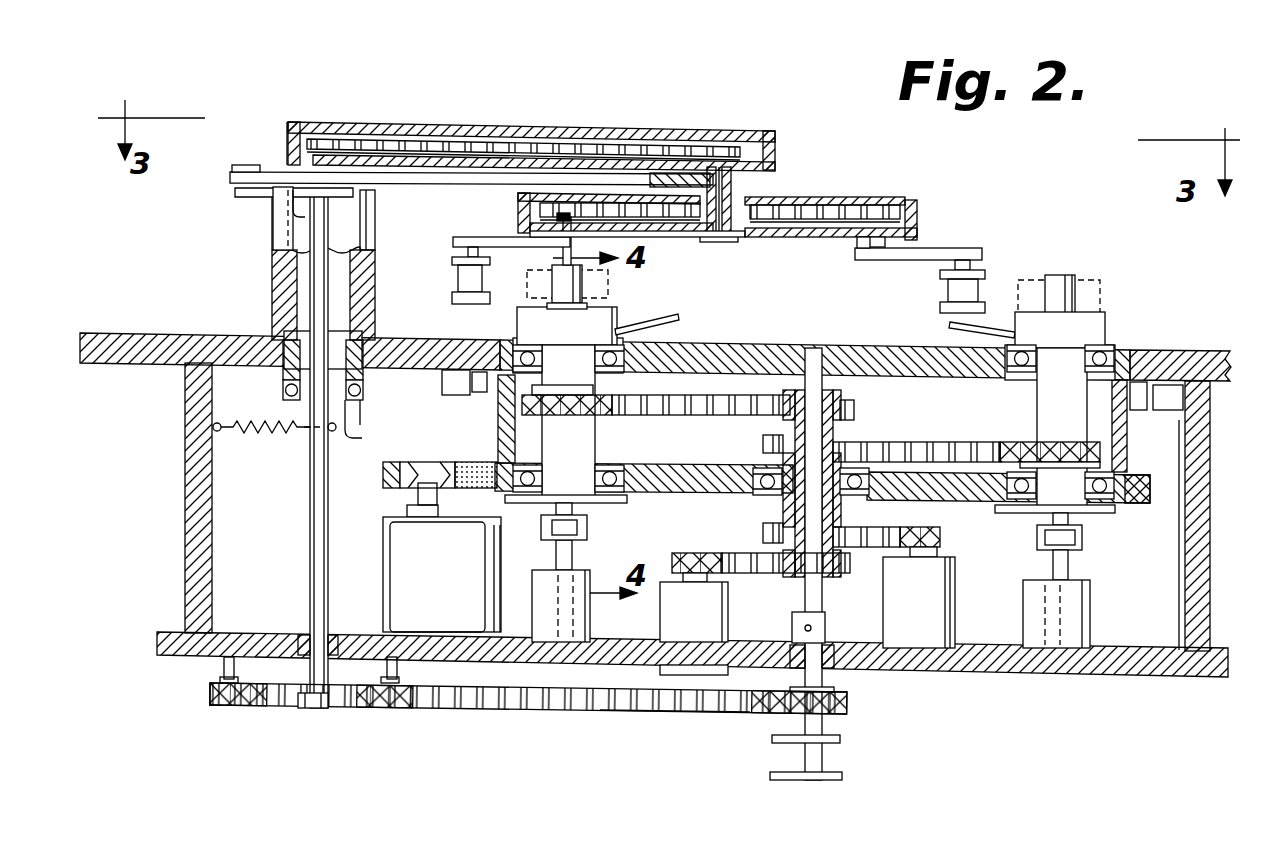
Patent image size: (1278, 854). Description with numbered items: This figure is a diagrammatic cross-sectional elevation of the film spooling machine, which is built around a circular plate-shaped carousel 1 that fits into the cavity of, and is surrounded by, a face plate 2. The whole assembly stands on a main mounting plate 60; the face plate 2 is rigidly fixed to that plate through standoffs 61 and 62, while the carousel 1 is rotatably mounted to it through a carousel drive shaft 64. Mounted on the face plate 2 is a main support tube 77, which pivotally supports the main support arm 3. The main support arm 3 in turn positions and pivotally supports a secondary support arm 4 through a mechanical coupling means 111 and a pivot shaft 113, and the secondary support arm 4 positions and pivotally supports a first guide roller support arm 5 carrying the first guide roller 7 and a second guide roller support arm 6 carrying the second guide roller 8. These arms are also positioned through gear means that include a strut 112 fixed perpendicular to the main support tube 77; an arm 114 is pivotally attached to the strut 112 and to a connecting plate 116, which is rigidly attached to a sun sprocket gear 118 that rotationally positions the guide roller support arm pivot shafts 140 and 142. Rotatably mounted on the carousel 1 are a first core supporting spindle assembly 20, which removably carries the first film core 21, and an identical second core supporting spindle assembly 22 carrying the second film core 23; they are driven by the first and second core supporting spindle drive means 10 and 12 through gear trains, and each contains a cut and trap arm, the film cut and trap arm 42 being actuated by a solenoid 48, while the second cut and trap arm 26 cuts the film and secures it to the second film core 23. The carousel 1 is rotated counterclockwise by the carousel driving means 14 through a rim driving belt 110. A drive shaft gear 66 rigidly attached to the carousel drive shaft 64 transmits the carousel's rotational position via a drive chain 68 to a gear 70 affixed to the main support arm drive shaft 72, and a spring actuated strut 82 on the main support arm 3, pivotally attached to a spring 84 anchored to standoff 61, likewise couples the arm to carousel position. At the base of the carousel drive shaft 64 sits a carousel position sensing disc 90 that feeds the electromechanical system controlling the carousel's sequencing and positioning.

The carousel 1 is at (812, 356).
The face plate 2 is at (124, 350).
The main support arm 3 is at (300, 122).
The secondary support arm 4 is at (851, 197).
The first guide roller support arm 5 is at (453, 241).
The second guide roller support arm 6 is at (933, 250).
The first guide roller 7 is at (458, 281).
The second guide roller 8 is at (983, 291).
The first core supporting spindle drive means 10 is at (686, 612).
The second core supporting spindle drive means 12 is at (944, 620).
The carousel driving means 14 is at (442, 557).
The first core supporting spindle assembly 20 is at (574, 438).
The first film core 21 is at (608, 284).
The second core supporting spindle assembly 22 is at (1058, 405).
The second film core 23 is at (1090, 286).
The second cut and trap arm 26 is at (957, 336).
The film cut and trap arm 42 is at (678, 328).
The solenoid 48 is at (592, 580).
The main mounting plate 60 is at (167, 645).
The standoff 61 is at (186, 488).
The standoff 62 is at (1198, 512).
The carousel drive shaft 64 is at (802, 592).
The drive shaft gear 66 is at (860, 705).
The drive chain 68 is at (698, 714).
The gear 70 is at (318, 710).
The main support arm drive shaft 72 is at (311, 598).
The main support tube 77 is at (276, 237).
The spring actuated strut 82 is at (352, 418).
The spring 84 is at (253, 440).
The carousel position sensing disc 90 is at (842, 777).
The rim driving belt 110 is at (471, 462).
The mechanical coupling means 111 is at (493, 150).
The strut 112 is at (282, 213).
The pivot shaft 113 is at (728, 185).
The arm 114 is at (416, 168).
The connecting plate 116 is at (678, 175).
The sun sprocket gear 118 is at (737, 237).
The guide roller support arm pivot shaft 140 is at (556, 214).
The guide roller support arm pivot shaft 142 is at (864, 238).